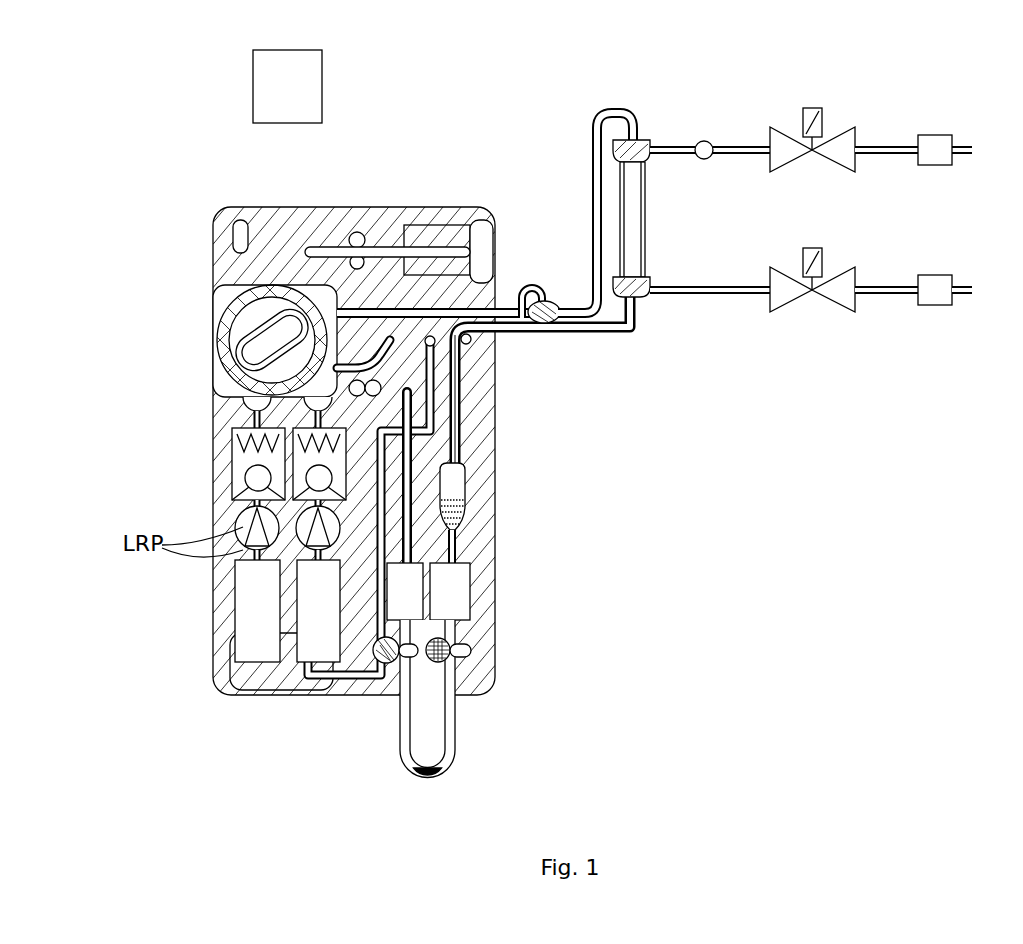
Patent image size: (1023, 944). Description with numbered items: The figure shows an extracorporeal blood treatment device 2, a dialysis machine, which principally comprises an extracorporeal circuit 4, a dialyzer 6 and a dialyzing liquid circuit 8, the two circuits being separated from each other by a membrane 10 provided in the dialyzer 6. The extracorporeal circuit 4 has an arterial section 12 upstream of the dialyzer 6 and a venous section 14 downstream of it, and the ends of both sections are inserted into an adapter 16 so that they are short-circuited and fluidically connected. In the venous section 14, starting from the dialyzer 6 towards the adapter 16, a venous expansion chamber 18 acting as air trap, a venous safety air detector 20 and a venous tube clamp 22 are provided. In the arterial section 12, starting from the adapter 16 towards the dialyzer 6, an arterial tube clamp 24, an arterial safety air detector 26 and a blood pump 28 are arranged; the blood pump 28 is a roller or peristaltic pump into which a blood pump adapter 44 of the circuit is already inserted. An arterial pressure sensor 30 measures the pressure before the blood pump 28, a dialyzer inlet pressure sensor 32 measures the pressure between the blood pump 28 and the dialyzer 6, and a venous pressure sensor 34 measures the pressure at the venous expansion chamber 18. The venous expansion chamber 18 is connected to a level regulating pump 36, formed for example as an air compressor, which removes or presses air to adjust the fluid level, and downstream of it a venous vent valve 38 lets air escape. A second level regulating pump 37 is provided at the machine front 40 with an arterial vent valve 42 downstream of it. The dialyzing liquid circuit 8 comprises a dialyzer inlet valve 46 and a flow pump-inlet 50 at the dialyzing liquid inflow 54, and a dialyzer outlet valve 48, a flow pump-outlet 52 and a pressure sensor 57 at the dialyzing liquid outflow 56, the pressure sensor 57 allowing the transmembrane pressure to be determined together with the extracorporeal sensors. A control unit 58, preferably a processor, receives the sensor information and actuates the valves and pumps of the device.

The extracorporeal blood treatment device 2 is at (192, 98).
The extracorporeal circuit 4 is at (432, 730).
The dialyzer 6 is at (648, 136).
The dialyzing liquid circuit 8 is at (966, 319).
The membrane 10 is at (637, 205).
The arterial section 12 is at (400, 748).
The venous section 14 is at (456, 712).
The adapter 16 is at (424, 784).
The venous expansion chamber 18 is at (478, 478).
The venous safety air detector 20 is at (478, 612).
The venous tube clamp 22 is at (478, 657).
The arterial tube clamp 24 is at (400, 690).
The arterial safety air detector 26 is at (478, 562).
The blood pump 28 is at (216, 340).
The arterial pressure sensor 30 is at (387, 340).
The dialyzer inlet pressure sensor 32 is at (472, 341).
The venous pressure sensor 34 is at (428, 335).
The level regulating pump 36 is at (290, 548).
The second level regulating pump 37 is at (238, 508).
The venous vent valve 38 is at (238, 428).
The machine front 40 is at (235, 612).
The arterial vent valve 42 is at (238, 452).
The blood pump adapter 44 is at (232, 300).
The dialyzer inlet valve 46 is at (818, 314).
The dialyzer outlet valve 48 is at (836, 140).
The flow pump-inlet 50 is at (937, 308).
The flow pump-outlet 52 is at (936, 146).
The dialyzing liquid inflow 54 is at (722, 296).
The dialyzing liquid outflow 56 is at (752, 146).
The pressure sensor 57 is at (706, 141).
The control unit 58 is at (287, 86).